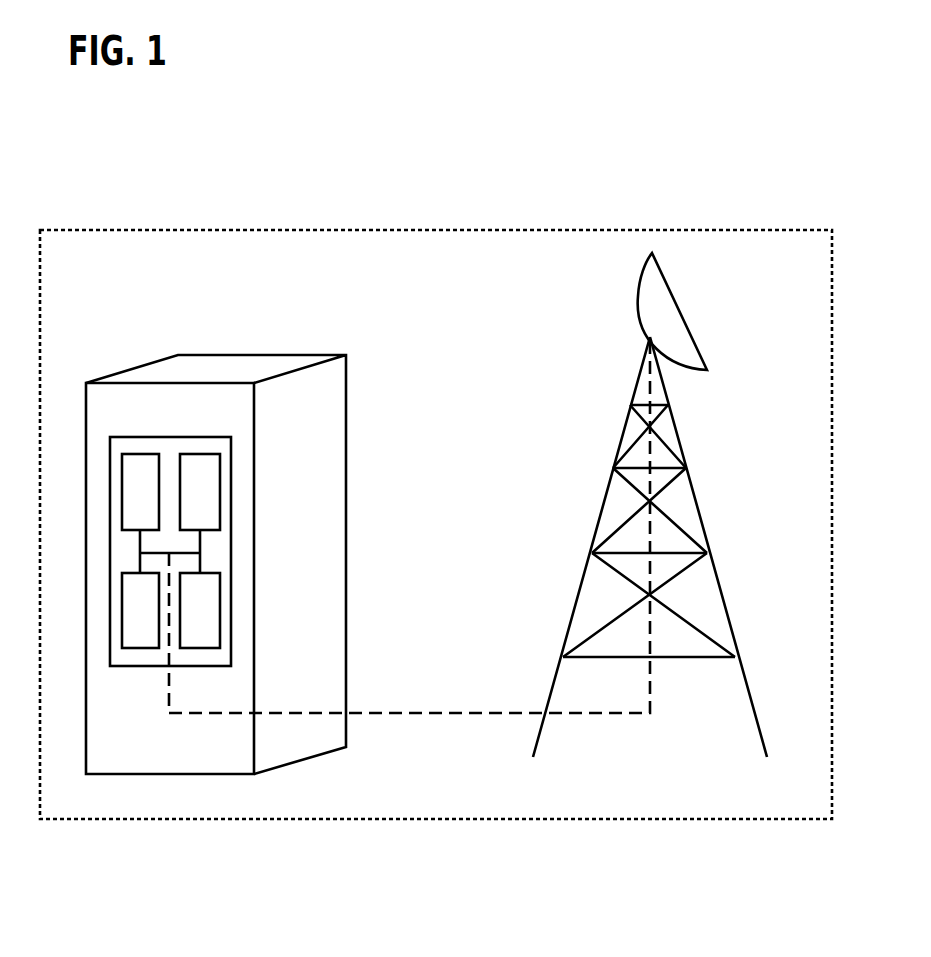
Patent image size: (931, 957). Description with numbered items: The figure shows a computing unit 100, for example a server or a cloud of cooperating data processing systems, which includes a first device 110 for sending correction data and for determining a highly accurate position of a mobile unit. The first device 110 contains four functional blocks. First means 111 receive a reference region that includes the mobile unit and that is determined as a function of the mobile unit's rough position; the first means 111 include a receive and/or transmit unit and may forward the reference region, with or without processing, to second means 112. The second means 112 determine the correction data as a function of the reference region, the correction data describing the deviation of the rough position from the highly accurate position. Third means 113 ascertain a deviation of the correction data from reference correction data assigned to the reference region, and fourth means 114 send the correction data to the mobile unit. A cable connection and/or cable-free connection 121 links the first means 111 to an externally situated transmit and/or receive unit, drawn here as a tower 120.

The computing unit 100 is at (430, 820).
The first device 110 is at (231, 547).
The first means 111 is at (135, 454).
The second means 112 is at (220, 478).
The third means 113 is at (145, 648).
The fourth means 114 is at (220, 612).
The base station / tower 120 is at (700, 658).
The cable connection and/or cable-free connection 121 is at (433, 713).